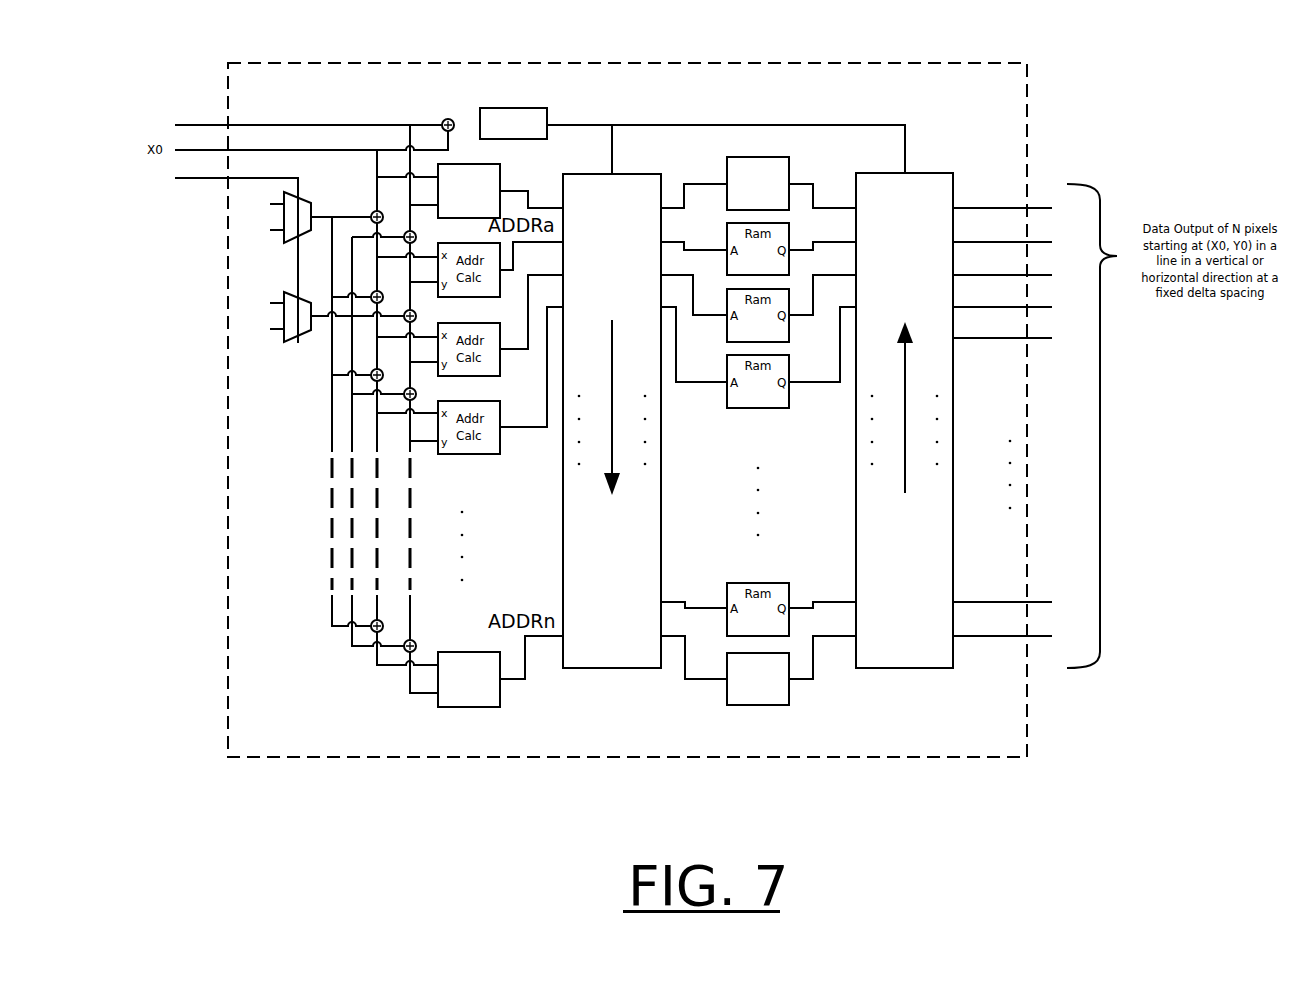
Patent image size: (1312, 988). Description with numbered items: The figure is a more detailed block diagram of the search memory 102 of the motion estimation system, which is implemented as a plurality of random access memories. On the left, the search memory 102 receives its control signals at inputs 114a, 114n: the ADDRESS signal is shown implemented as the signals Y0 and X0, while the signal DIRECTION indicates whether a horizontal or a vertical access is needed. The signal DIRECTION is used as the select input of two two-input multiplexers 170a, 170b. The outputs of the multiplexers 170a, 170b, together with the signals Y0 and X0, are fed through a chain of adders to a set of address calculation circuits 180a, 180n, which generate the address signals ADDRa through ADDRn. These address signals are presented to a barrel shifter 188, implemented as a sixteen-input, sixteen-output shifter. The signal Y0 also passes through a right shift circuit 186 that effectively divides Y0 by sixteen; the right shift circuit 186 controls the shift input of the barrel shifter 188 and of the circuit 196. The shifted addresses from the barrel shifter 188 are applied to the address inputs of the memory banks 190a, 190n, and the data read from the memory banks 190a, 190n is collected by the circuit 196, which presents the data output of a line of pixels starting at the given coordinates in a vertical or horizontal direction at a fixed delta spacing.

The search memory 102 is at (238, 38).
The input 114a is at (228, 125).
The input 114n is at (228, 178).
The multiplexer 170a is at (291, 244).
The multiplexer 170b is at (291, 344).
The address calculation circuit 180a is at (487, 164).
The address calculation circuit 180n is at (480, 707).
The right shift circuit 186 is at (520, 108).
The barrel shifter 188 is at (610, 669).
The memory bank 190a is at (765, 156).
The memory bank 190n is at (763, 706).
The circuit 196 is at (910, 669).